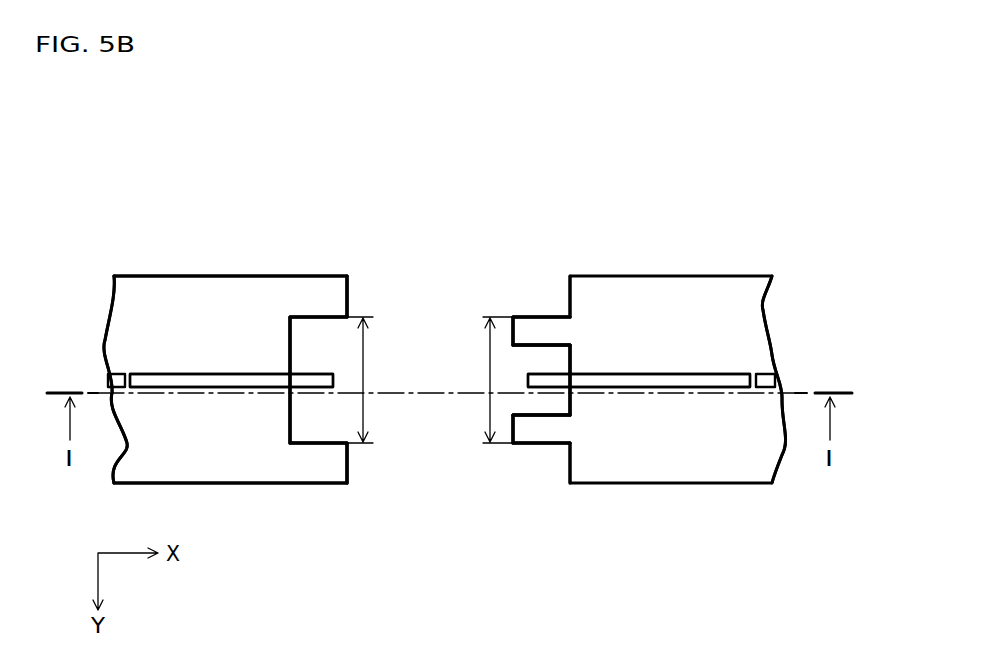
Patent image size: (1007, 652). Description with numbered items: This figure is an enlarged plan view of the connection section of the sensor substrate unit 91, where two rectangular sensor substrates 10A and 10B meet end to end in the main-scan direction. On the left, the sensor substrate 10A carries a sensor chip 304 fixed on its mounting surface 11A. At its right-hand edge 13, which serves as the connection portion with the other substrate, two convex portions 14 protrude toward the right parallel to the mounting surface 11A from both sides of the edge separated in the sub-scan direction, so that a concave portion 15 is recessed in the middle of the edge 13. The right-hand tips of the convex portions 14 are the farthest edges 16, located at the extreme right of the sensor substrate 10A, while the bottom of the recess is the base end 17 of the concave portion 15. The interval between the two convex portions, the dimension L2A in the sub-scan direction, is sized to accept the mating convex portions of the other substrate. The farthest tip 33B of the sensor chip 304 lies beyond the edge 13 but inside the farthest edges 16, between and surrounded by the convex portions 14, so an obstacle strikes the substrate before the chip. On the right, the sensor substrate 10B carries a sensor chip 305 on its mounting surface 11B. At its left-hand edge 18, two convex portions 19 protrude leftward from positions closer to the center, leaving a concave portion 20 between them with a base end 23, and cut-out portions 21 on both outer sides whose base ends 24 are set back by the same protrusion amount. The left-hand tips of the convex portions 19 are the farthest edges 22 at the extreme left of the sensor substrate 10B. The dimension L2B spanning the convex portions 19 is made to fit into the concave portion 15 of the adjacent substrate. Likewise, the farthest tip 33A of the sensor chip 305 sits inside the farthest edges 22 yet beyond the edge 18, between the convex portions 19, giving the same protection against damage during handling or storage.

The sensor substrate unit 91 is at (554, 165).
The sensor substrate 10A is at (192, 278).
The mounting surface 11A is at (148, 293).
The edge 13 is at (358, 250).
The convex portions 14 is at (294, 284).
The farthest edges 16 is at (356, 300).
The base end 17 is at (292, 406).
The concave portion 15 is at (338, 423).
The farthest tip 33B is at (333, 380).
The sensor chip 304 is at (220, 388).
The dimension L2A is at (365, 350).
The sensor substrate 10B is at (688, 277).
The mounting surface 11B is at (740, 289).
The edge 18 is at (507, 240).
The cut-out portions 21 is at (585, 231).
The convex portions 19 is at (538, 321).
The farthest edges 22 is at (512, 324).
The base ends 24 is at (566, 300).
The base end 23 is at (570, 402).
The concave portion 20 is at (513, 428).
The farthest tip 33A is at (527, 385).
The sensor chip 305 is at (663, 388).
The dimension L2B is at (488, 370).